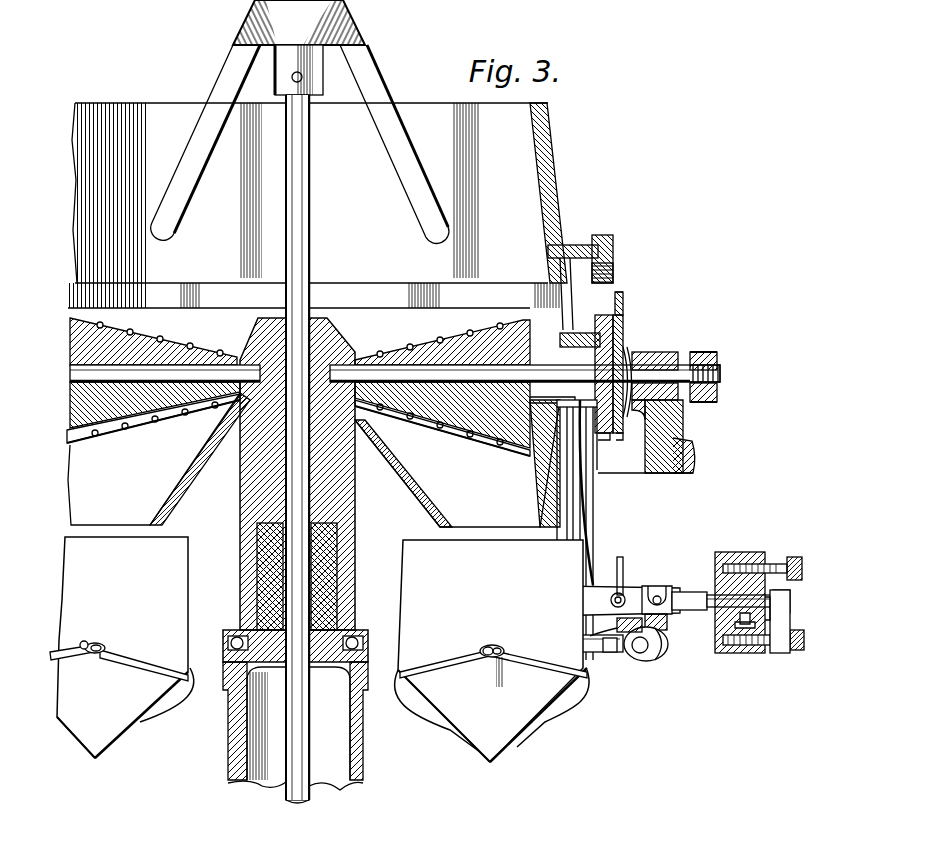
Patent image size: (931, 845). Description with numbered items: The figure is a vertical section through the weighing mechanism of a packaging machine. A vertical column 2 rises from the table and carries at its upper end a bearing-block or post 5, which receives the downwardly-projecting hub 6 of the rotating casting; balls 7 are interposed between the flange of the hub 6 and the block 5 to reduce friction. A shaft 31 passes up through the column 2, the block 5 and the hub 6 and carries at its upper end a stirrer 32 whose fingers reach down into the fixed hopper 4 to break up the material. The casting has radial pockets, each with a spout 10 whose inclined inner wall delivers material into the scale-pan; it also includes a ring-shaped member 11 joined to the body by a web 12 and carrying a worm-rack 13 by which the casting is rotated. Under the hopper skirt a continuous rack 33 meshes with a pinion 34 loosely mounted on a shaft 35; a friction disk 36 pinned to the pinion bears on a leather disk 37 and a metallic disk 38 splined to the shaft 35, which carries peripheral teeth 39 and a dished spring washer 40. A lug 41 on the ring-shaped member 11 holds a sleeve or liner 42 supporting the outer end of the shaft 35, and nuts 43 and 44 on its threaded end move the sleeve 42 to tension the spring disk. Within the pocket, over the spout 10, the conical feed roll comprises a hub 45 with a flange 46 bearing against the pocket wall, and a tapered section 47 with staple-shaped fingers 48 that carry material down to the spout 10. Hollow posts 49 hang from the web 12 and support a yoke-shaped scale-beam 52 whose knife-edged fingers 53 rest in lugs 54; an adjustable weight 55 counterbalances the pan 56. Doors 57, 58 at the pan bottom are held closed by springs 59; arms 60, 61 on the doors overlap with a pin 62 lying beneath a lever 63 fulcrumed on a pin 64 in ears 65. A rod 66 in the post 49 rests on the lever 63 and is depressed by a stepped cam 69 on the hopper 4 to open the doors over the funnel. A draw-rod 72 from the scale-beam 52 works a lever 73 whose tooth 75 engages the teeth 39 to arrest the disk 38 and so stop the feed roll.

The vertical column 2 is at (360, 777).
The hopper 4 is at (540, 170).
The bearing-block 5 is at (330, 560).
The hub 6 is at (355, 510).
The balls 7 is at (357, 627).
The spout 10 is at (321, 460).
The ring-shaped member 11 is at (657, 474).
The web 12 is at (670, 427).
The worm-rack 13 is at (693, 465).
The shaft 31 is at (300, 265).
The stirrer 32 is at (390, 147).
The continuous rack 33 is at (598, 315).
The pinion 34 is at (593, 478).
The shaft 35 is at (217, 372).
The friction disk 36 is at (612, 317).
The leather disk 37 is at (606, 441).
The metallic disk 38 is at (632, 353).
The teeth 39 is at (620, 441).
The dished spring washer 40 is at (663, 352).
The lug 41 is at (692, 363).
The sleeve 42 is at (717, 352).
The nut 43 is at (697, 403).
The nut 44 is at (717, 393).
The hub 45 is at (175, 384).
The flange 46 is at (87, 420).
The tapered section 47 is at (113, 403).
The fingers 48 is at (187, 345).
The hollow post 49 is at (570, 523).
The scale-beam 52 is at (112, 600).
The fingers 53 is at (656, 588).
The lugs 54 is at (677, 590).
The adjustable weight 55 is at (743, 653).
The pan 56 is at (320, 649).
The door 57 is at (108, 750).
The door 58 is at (85, 750).
The springs 59 is at (162, 720).
The arm 60 is at (122, 657).
The arm 61 is at (65, 657).
The pin 62 is at (93, 653).
The lever 63 is at (603, 652).
The pin 64 is at (638, 650).
The ears 65 is at (663, 652).
The rod 66 is at (605, 620).
The stepped cam 69 is at (585, 330).
The draw-rod 72 is at (623, 562).
The lever 73 is at (623, 290).
The tooth 75 is at (623, 305).